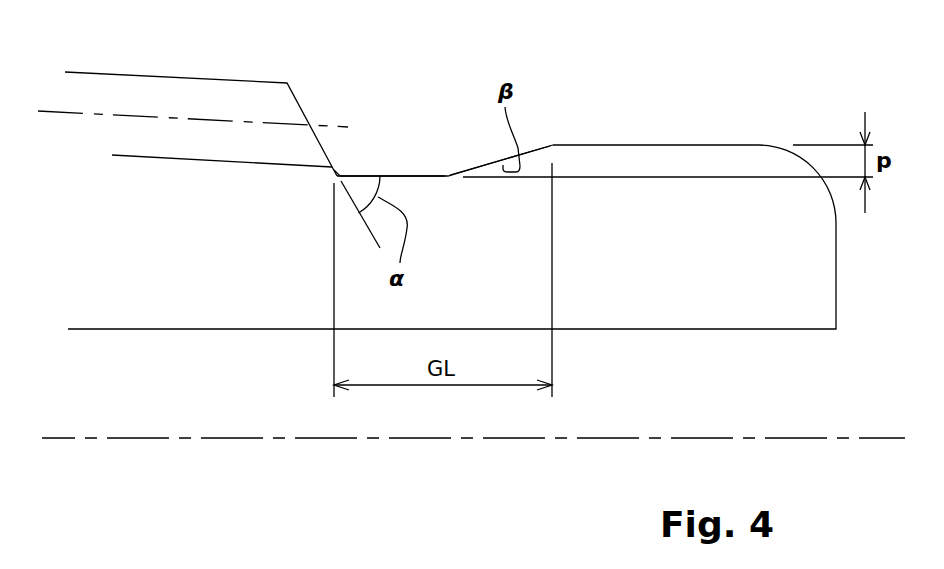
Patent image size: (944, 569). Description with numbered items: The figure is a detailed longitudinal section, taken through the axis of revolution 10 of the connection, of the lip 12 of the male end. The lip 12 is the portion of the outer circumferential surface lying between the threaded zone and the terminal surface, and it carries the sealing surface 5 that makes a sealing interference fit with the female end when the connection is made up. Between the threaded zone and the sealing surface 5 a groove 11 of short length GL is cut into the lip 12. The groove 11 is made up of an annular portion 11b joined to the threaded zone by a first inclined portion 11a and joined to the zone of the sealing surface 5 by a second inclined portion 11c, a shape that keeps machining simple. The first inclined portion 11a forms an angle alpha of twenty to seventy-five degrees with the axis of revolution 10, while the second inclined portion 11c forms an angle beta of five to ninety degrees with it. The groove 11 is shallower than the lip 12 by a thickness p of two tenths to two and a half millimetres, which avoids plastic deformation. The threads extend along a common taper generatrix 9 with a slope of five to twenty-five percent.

The sealing surface 5 is at (695, 145).
The taper generatrix 9 is at (156, 115).
The axis of revolution 10 is at (778, 438).
The groove 11 is at (423, 143).
The first inclined portion 11a is at (334, 173).
The annular portion 11b is at (428, 177).
The second inclined portion 11c is at (478, 168).
The lip 12 is at (702, 282).